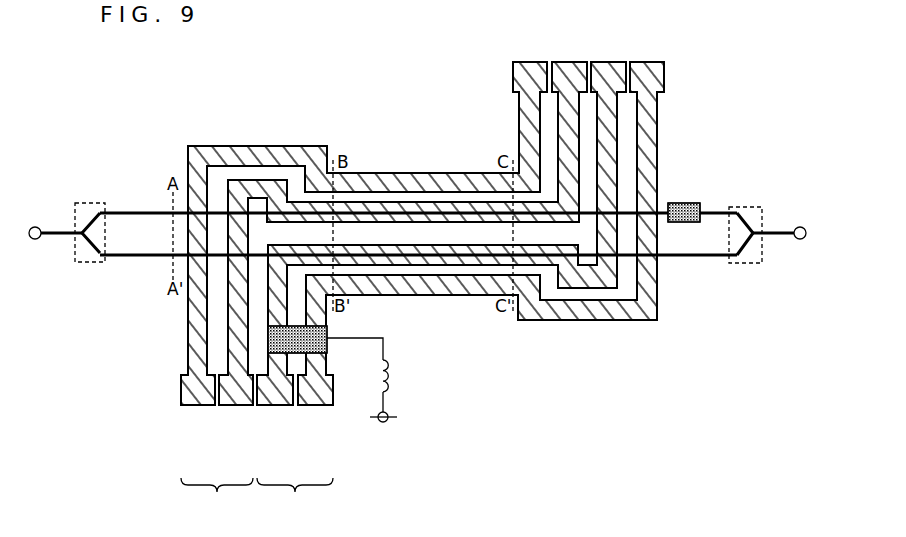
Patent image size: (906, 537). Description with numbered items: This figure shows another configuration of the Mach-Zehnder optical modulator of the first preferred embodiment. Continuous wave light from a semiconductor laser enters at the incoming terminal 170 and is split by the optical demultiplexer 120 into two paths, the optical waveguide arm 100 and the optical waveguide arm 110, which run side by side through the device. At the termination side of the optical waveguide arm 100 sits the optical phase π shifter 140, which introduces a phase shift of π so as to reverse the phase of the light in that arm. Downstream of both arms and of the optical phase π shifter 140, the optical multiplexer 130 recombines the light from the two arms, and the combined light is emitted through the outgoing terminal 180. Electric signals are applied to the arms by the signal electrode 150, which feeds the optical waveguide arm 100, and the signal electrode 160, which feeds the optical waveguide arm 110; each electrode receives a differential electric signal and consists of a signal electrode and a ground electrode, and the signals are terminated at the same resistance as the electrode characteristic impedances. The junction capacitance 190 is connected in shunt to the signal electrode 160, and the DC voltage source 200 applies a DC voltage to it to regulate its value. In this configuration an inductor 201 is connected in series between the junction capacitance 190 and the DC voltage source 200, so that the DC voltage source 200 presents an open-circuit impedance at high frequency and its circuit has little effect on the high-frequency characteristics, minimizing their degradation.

The optical waveguide arm 100 is at (123, 211).
The optical waveguide arm 110 is at (126, 257).
The optical demultiplexer 120 is at (88, 203).
The optical multiplexer 130 is at (743, 207).
The optical phase π shifter 140 is at (683, 203).
The signal electrode 150 is at (217, 460).
The signal electrode 160 is at (295, 460).
The incoming terminal 170 is at (36, 226).
The outgoing terminal 180 is at (797, 227).
The junction capacitance 190 is at (329, 336).
The DC voltage source 200 is at (388, 413).
The inductor 201 is at (392, 368).